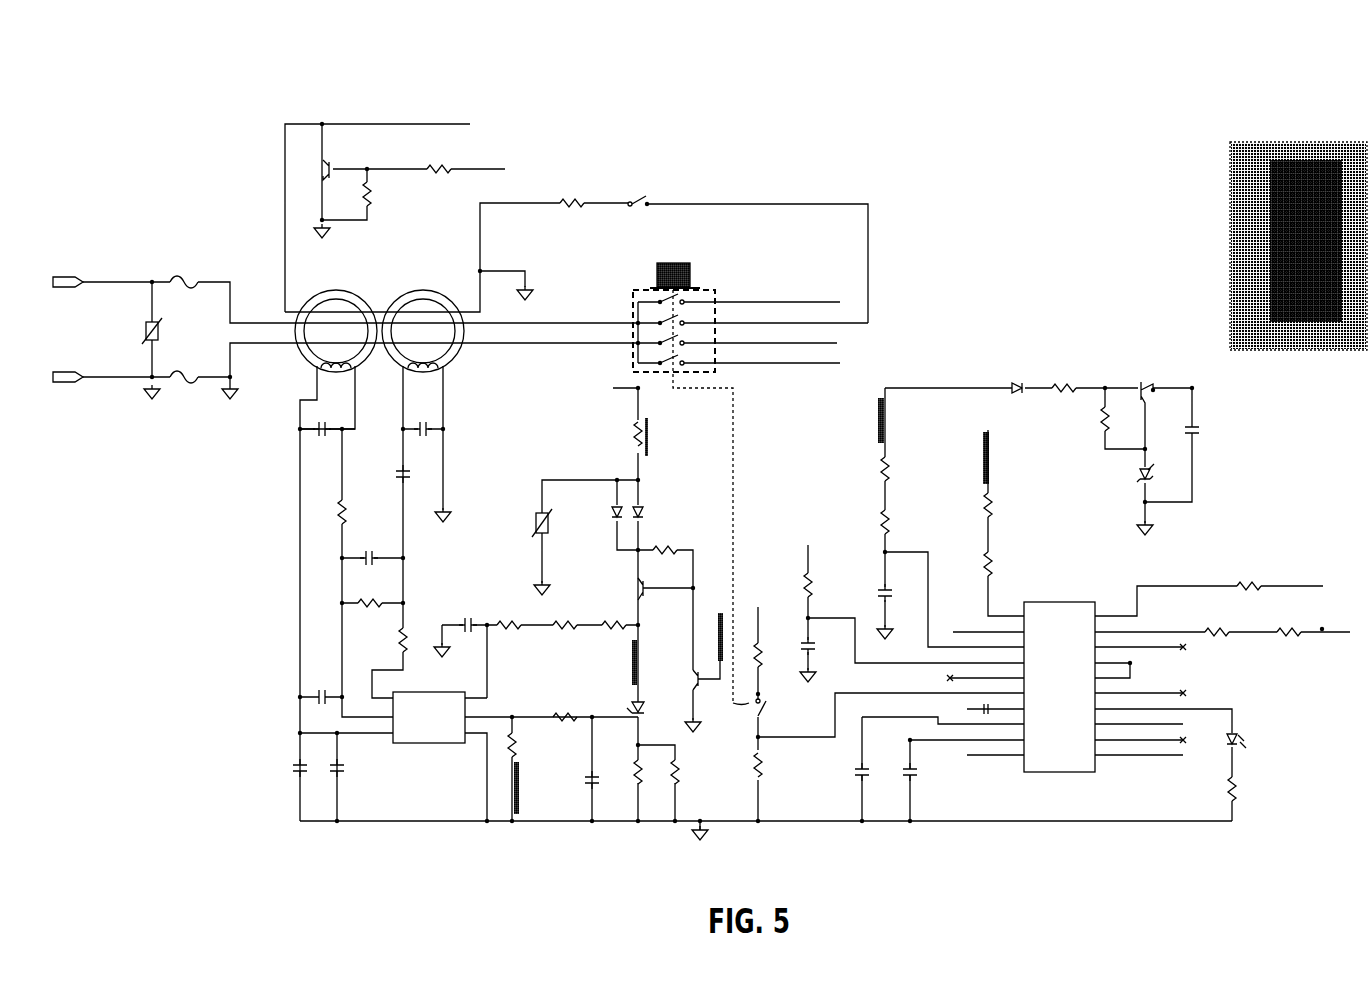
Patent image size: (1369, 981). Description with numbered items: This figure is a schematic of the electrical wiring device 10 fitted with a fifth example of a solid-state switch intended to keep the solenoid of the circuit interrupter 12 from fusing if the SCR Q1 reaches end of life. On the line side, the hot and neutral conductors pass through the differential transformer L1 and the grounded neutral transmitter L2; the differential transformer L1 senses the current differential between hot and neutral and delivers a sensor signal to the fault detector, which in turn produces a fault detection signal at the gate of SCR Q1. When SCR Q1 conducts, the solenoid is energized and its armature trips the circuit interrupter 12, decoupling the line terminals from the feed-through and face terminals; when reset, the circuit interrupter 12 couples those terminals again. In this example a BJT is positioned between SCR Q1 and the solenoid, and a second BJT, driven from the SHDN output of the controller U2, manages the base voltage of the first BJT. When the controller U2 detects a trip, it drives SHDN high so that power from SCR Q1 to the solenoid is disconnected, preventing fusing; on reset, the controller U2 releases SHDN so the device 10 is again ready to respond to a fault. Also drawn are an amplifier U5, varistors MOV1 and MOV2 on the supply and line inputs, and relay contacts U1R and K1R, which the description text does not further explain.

The electrical wiring device 10 is at (232, 113).
The circuit interrupter 12 is at (642, 290).
The differential transformer L1 is at (336, 324).
The grounded neutral transmitter L2 is at (423, 324).
The controller U2 is at (1059, 687).
The amplifier U5 is at (429, 722).
The metal oxide varistor MOV1 is at (515, 523).
The metal oxide varistor MOV2 is at (123, 331).
The SCR Q1 is at (656, 708).
The relay contact U1R is at (637, 195).
The relay contact K1R is at (770, 707).